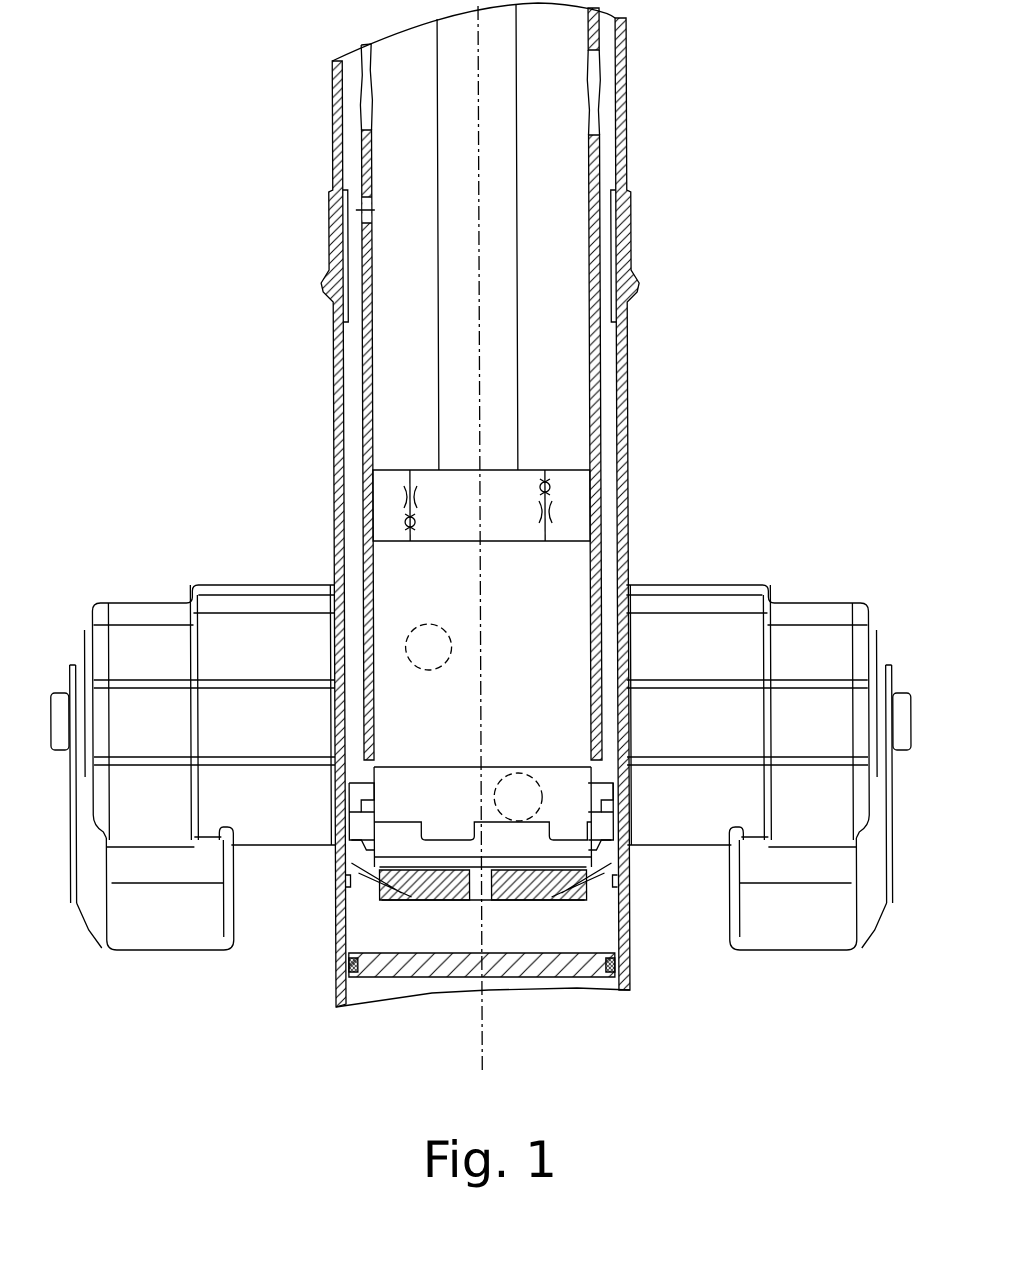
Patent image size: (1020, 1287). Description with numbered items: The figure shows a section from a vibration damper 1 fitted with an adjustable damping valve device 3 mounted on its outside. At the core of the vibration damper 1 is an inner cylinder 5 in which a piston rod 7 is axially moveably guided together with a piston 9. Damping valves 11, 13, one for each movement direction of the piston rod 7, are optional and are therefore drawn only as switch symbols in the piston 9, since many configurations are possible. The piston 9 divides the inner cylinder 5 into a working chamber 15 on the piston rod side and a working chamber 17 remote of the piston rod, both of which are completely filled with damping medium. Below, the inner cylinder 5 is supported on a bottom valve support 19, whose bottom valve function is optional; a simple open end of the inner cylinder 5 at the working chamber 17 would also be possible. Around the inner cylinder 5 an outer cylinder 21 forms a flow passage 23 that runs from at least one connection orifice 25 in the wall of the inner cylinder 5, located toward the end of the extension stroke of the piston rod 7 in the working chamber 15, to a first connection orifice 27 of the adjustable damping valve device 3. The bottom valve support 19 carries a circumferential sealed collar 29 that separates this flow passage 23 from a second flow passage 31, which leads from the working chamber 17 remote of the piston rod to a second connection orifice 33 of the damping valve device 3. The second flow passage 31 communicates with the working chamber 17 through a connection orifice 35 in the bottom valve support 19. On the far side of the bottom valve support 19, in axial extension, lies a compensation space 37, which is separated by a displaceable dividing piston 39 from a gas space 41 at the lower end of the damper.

The vibration damper 1 is at (160, 1047).
The adjustable damping valve device 3 is at (778, 548).
The inner cylinder 5 is at (604, 341).
The piston rod 7 is at (500, 153).
The piston 9 is at (575, 508).
The damping valve 11 is at (397, 502).
The damping valve 13 is at (562, 481).
The working chamber on the piston rod side 15 is at (393, 363).
The working chamber remote of the piston rod 17 is at (552, 590).
The bottom valve support 19 is at (593, 888).
The outer cylinder 21 is at (334, 150).
The flow passage 23 is at (353, 400).
The connection orifice 25 is at (366, 215).
The first connection orifice 27 is at (410, 628).
The sealed collar 29 is at (345, 785).
The second flow passage 31 is at (350, 827).
The second connection orifice 33 is at (541, 800).
The connection orifice 35 is at (367, 800).
The compensation space 37 is at (441, 937).
The dividing piston 39 is at (533, 965).
The gas space 41 is at (602, 982).